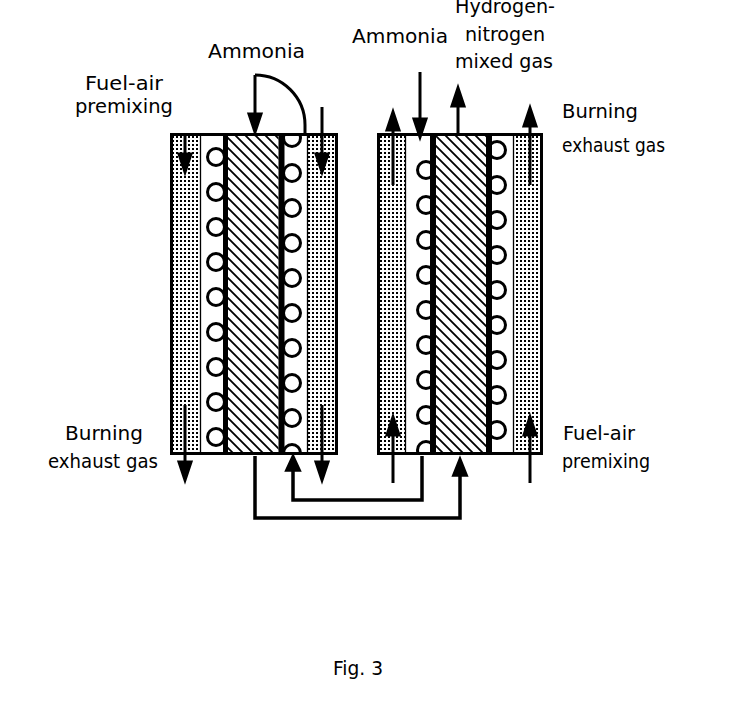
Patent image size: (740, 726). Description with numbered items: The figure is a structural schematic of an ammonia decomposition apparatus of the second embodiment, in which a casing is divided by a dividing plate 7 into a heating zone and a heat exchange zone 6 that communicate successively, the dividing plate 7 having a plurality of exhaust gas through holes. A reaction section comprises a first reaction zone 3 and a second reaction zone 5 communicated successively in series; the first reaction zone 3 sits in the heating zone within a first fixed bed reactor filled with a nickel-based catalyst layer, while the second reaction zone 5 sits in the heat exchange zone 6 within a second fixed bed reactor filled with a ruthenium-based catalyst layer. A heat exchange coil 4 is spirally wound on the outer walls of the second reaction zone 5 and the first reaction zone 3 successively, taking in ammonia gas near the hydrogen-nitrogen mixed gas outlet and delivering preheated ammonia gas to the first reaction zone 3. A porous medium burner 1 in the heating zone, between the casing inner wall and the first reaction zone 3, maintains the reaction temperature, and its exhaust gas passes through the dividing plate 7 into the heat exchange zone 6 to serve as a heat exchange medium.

The burner 1 is at (188, 258).
The first reaction zone 3 is at (203, 308).
The heat exchange coil 4 is at (205, 345).
The second reaction zone 5 is at (470, 233).
The heat exchange zone 6 is at (527, 333).
The dividing plate 7 is at (235, 458).